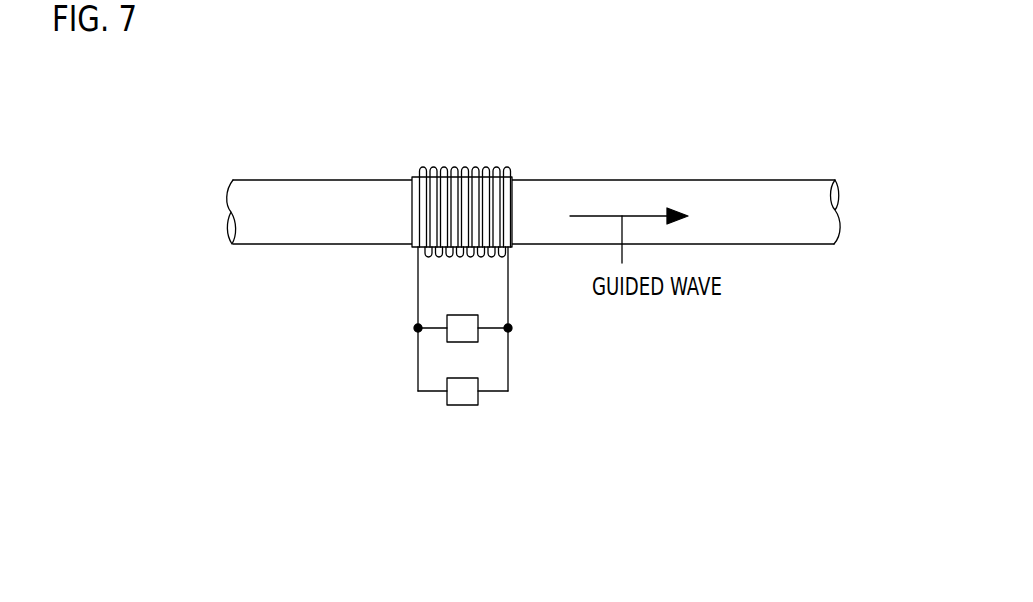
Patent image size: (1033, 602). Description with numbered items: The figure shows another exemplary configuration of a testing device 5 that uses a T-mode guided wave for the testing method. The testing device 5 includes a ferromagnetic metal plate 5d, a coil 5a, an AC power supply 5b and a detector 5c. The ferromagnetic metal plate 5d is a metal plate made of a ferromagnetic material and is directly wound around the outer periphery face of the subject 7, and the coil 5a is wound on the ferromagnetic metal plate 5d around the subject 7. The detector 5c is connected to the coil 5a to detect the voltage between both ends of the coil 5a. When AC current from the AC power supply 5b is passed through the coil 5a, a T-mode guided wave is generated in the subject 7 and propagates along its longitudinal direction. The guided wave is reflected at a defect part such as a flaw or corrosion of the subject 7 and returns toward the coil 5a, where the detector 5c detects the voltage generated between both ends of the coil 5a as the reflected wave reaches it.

The testing device 5 is at (372, 280).
The coil 5a is at (413, 222).
The AC power supply 5b is at (462, 397).
The detector 5c is at (447, 335).
The ferromagnetic metal plate 5d is at (411, 208).
The subject 7 is at (718, 195).